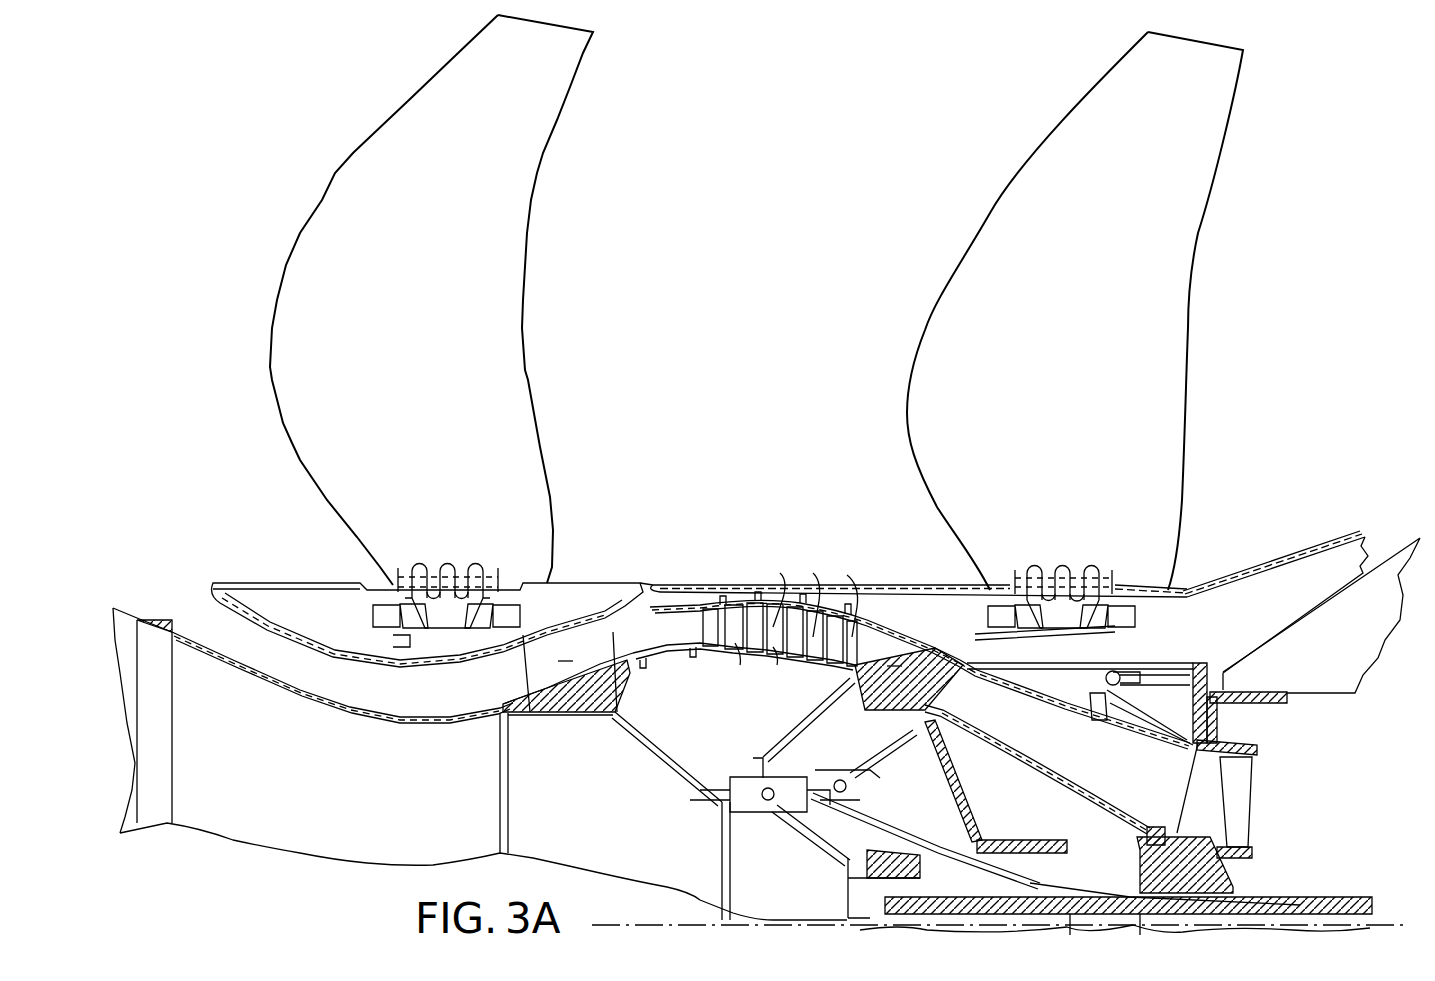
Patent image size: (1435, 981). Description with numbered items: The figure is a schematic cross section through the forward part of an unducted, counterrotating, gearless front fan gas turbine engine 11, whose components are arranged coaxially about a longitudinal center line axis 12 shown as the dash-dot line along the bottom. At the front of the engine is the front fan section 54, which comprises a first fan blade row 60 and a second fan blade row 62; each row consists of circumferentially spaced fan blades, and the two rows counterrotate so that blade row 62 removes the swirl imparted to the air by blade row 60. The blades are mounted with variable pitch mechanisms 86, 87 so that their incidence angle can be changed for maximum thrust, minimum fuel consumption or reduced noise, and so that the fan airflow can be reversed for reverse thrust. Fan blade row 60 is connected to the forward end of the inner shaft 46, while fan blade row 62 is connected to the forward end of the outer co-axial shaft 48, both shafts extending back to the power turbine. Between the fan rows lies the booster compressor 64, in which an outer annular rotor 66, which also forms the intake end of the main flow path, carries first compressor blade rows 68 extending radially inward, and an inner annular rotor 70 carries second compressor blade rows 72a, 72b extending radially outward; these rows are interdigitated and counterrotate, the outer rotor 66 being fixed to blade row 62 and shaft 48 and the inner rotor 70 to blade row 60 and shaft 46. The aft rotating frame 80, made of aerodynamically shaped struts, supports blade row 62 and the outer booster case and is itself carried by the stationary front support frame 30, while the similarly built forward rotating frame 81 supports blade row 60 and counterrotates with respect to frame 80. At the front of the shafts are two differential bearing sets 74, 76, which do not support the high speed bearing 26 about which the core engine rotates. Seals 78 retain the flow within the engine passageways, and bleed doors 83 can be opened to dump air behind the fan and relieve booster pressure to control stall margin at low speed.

The gas turbine engine 11 is at (1300, 343).
The longitudinal center line axis 12 is at (670, 923).
The high speed bearing 26 is at (1230, 867).
The front support frame 30 is at (1043, 743).
The inner shaft 46 is at (1350, 907).
The outer co-axial shaft 48 is at (1283, 893).
The front fan section 54 is at (730, 585).
The first fan blade row 60 is at (513, 257).
The second fan blade row 62 is at (983, 253).
The booster compressor 64 is at (712, 557).
The outer annular rotor 66 is at (675, 583).
The first compressor blade rows 68 is at (707, 622).
The inner annular rotor 70 is at (752, 642).
The second compressor blade rows 72a is at (732, 610).
The second compressor blade rows 72b is at (712, 647).
The differential bearing set 74 is at (995, 885).
The differential bearing set 76 is at (777, 813).
The seals 78 is at (975, 660).
The rotating frame 80 is at (915, 660).
The rotating frame 81 is at (540, 672).
The bleed doors 83 is at (1127, 720).
The variable pitch mechanism 86 is at (520, 613).
The variable pitch mechanism 87 is at (1133, 625).